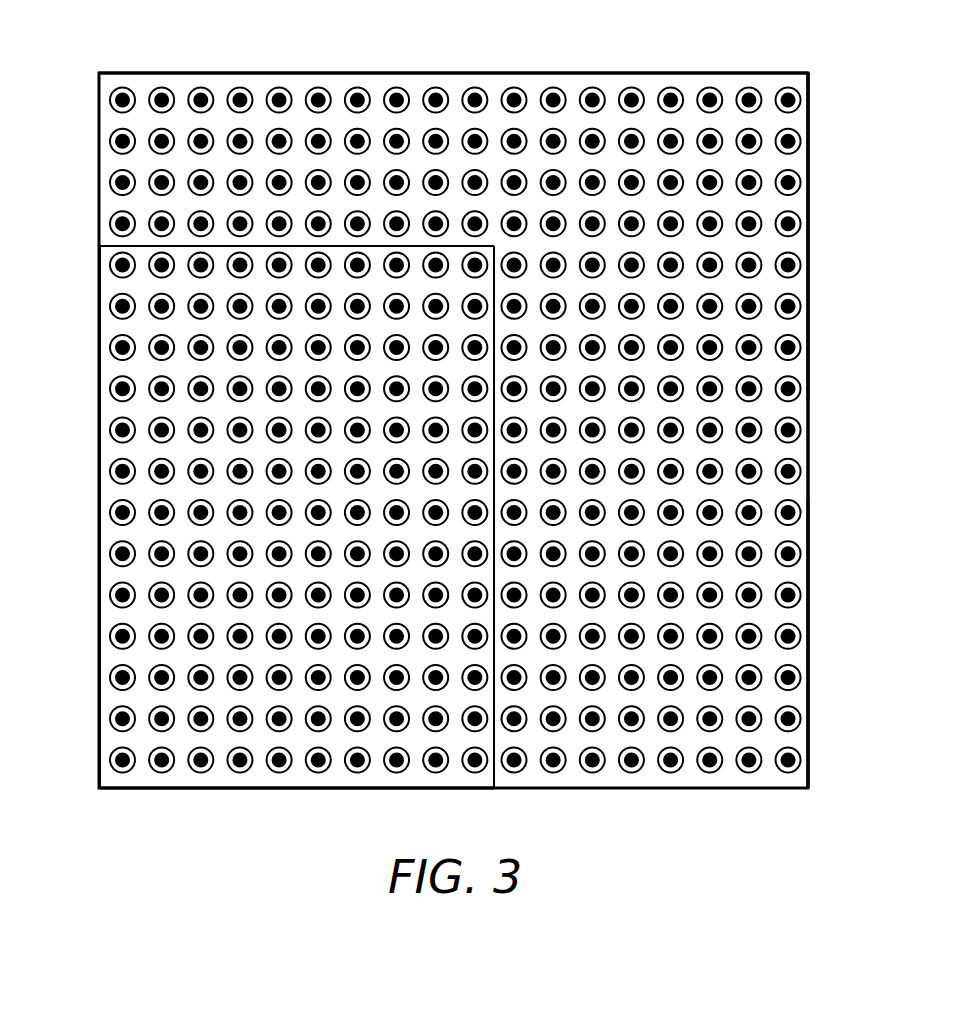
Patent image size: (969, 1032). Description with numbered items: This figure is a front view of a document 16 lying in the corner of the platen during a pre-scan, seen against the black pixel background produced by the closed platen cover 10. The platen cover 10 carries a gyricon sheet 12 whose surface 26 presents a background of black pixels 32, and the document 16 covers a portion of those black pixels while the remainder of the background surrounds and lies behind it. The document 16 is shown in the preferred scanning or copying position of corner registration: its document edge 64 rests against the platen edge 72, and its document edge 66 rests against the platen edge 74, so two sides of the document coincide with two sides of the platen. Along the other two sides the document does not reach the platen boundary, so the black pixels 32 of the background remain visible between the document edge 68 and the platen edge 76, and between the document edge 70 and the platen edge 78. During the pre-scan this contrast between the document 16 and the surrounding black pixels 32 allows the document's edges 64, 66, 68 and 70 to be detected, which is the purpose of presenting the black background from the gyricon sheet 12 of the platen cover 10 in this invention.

The platen cover 10 is at (808, 365).
The gyricon sheet 12 is at (808, 298).
The document 16 is at (99, 312).
The surface 26 is at (808, 228).
The black pixels 32 is at (444, 93).
The document edge 64 is at (99, 541).
The document edge 66 is at (297, 788).
The document edge 68 is at (494, 509).
The document edge 70 is at (185, 246).
The platen edge 72 is at (99, 701).
The platen edge 74 is at (453, 788).
The platen edge 76 is at (808, 708).
The platen edge 78 is at (288, 72).